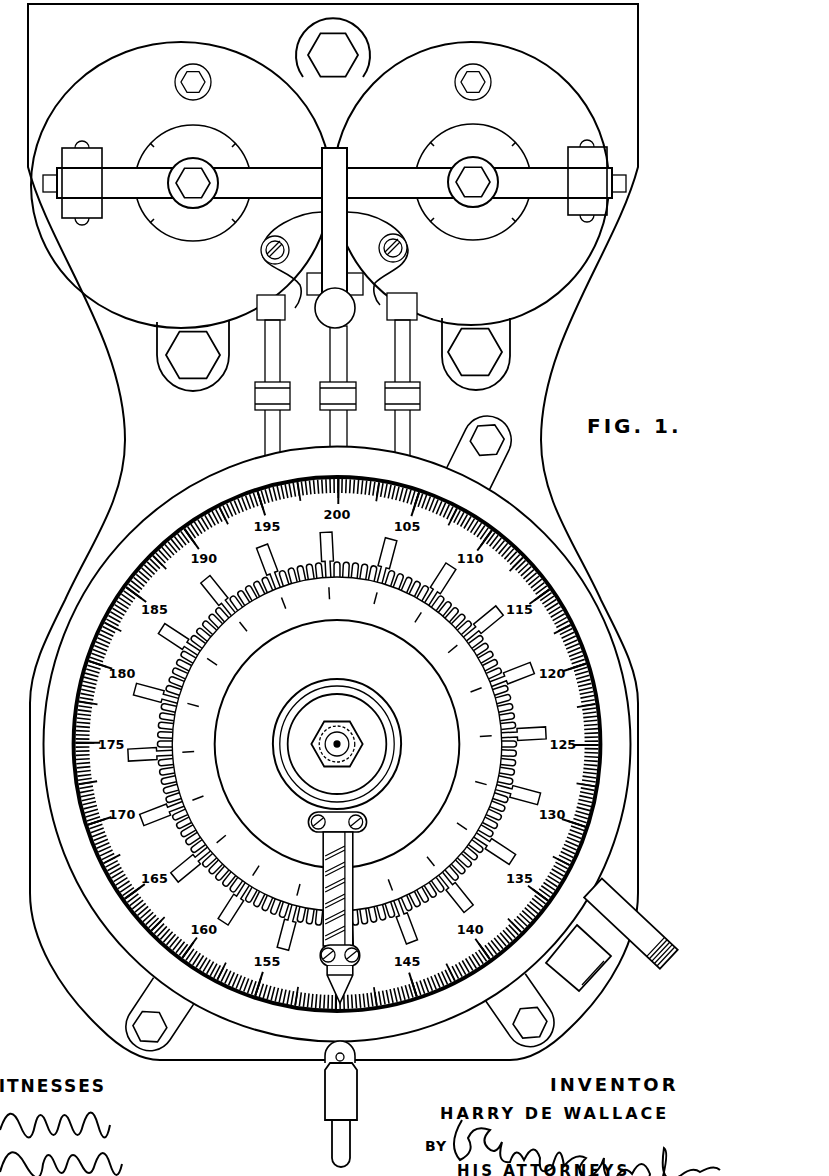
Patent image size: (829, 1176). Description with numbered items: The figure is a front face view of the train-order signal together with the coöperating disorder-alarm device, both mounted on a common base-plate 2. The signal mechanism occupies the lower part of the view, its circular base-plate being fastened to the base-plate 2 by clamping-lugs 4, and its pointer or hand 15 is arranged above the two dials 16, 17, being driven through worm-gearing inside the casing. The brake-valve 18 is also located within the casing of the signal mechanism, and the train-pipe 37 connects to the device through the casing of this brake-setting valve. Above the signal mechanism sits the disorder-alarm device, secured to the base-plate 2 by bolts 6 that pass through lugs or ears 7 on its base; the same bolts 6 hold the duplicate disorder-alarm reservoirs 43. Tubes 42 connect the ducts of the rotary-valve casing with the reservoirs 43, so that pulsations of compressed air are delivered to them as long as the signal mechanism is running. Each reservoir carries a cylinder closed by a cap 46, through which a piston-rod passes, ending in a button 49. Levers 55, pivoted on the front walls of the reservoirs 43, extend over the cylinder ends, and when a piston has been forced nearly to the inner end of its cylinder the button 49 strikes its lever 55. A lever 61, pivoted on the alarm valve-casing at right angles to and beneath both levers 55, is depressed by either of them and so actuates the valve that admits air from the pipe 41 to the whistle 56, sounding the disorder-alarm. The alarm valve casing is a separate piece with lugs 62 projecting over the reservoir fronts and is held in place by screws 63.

The base-plate 2 is at (552, 508).
The clamping-lugs 4 is at (490, 482).
The bolts 6 is at (325, 50).
The lugs or ears 7 is at (372, 47).
The pointer or hand 15 is at (330, 839).
The dial 16 is at (305, 1015).
The dial 17 is at (478, 850).
The brake-valve 18 is at (572, 980).
The train-pipe 37 is at (653, 938).
The pipe or tube 41 is at (333, 363).
The pipes or tubes 42 is at (270, 364).
The disorder-alarm reservoirs 43 is at (320, 185).
The cap 46 is at (223, 135).
The button 49 is at (207, 148).
The levers 55 is at (282, 172).
The whistle 56 is at (345, 317).
The lever 61 is at (332, 232).
The lugs 62 is at (273, 265).
The screws 63 is at (278, 243).